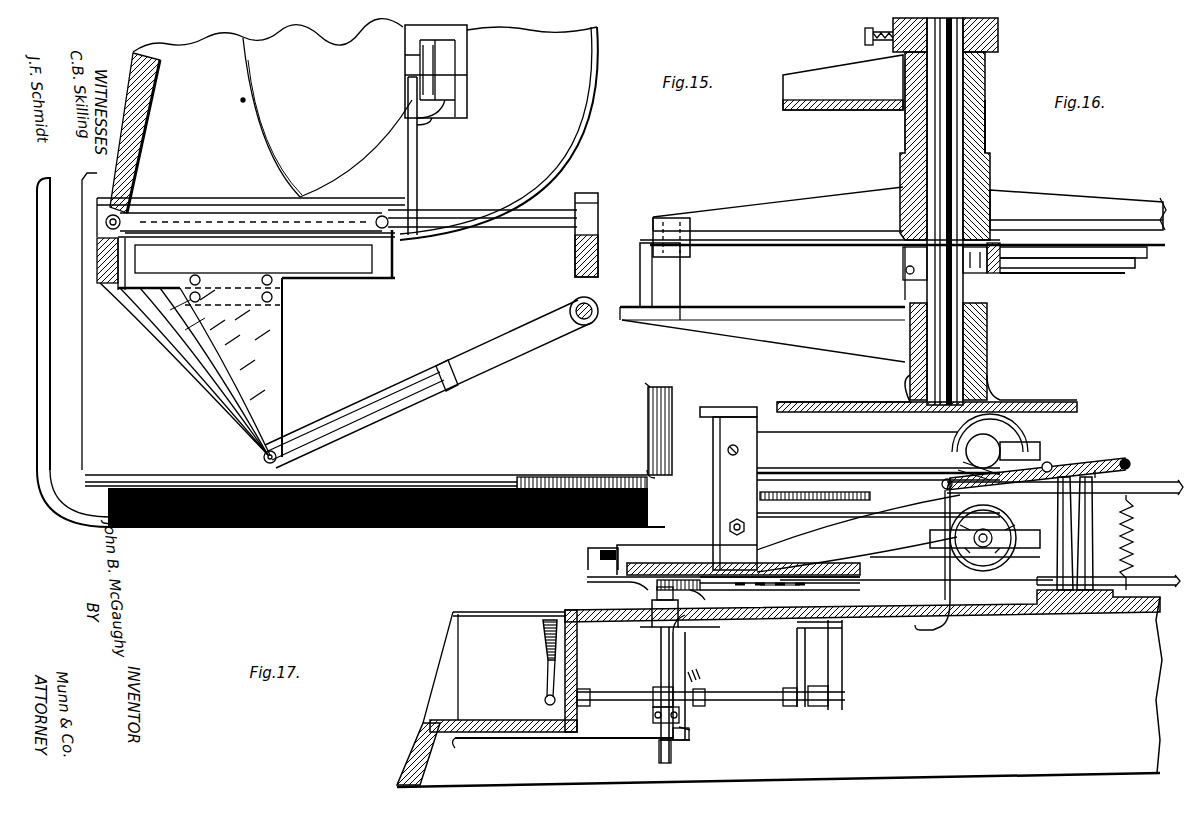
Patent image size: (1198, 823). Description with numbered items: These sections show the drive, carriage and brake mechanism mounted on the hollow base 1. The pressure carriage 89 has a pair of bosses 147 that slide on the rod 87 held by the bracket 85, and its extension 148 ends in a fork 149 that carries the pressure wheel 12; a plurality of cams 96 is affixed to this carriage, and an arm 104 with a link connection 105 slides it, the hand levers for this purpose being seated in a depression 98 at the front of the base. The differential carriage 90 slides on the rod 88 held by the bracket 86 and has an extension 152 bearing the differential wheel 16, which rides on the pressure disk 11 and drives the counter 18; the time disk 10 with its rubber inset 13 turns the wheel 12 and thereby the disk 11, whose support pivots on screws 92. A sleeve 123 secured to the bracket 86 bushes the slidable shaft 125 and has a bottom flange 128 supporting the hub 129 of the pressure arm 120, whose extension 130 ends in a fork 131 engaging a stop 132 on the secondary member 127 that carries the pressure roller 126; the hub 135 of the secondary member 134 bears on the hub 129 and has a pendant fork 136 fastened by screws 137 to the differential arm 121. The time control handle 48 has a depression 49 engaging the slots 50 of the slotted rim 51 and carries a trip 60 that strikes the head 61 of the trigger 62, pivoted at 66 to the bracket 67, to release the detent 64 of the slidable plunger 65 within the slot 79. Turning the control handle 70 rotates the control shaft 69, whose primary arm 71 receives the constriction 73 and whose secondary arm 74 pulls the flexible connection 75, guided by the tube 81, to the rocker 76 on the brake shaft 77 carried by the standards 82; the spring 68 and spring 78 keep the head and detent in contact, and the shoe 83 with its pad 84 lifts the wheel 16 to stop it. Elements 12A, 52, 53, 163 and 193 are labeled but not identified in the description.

In FIG. 15, the hollow base 1 is at (372, 497).
In FIG. 16, the hollow base 1 is at (870, 402).
In FIG. 17, the hollow base 1 is at (560, 612).
In FIG. 15, the time disk 10 is at (243, 100).
In FIG. 17, the time disk 10 is at (1152, 578).
In FIG. 17, the pressure disk 11 is at (1145, 482).
In FIG. 15, the pressure wheel 12 is at (405, 55).
In FIG. 17, the pressure wheel 12 is at (1012, 558).
In FIG. 16, the screw 12A is at (865, 36).
In FIG. 15, the rubber inset 13 is at (268, 137).
In FIG. 17, the differential wheel 16 is at (1000, 428).
In FIG. 17, the counter 18 is at (968, 455).
In FIG. 17, the time control handle 48 is at (833, 563).
In FIG. 17, the depression 49 is at (670, 575).
In FIG. 17, the slots 50 is at (700, 582).
In FIG. 17, the slotted rim 51 is at (640, 575).
In FIG. 17, the bracket 52 is at (640, 545).
In FIG. 17, the knob 53 is at (588, 556).
In FIG. 17, the trip 60 is at (705, 626).
In FIG. 17, the head of trigger 61 is at (686, 612).
In FIG. 17, the trigger 62 is at (688, 660).
In FIG. 17, the detent 64 is at (652, 605).
In FIG. 17, the slidable plunger 65 is at (661, 668).
In FIG. 17, the pivot 66 is at (689, 735).
In FIG. 17, the bracket 67 is at (583, 738).
In FIG. 17, the spring 68 is at (700, 690).
In FIG. 17, the control shaft 69 is at (780, 693).
In FIG. 17, the control handle 70 is at (545, 645).
In FIG. 17, the primary arm 71 is at (653, 716).
In FIG. 17, the constriction 73 is at (683, 727).
In FIG. 17, the secondary arm 74 is at (800, 660).
In FIG. 17, the flexible connection 75 is at (915, 630).
In FIG. 17, the rocker 76 is at (1098, 470).
In FIG. 17, the brake shaft 77 is at (1048, 463).
In FIG. 17, the spring 78 is at (1130, 540).
In FIG. 17, the slot 79 is at (640, 627).
In FIG. 17, the tube 81 is at (950, 625).
In FIG. 17, the standards 82 is at (1065, 535).
In FIG. 17, the shoe 83 is at (1000, 520).
In FIG. 17, the pad 84 is at (1005, 470).
In FIG. 15, the bracket 85 is at (108, 225).
In FIG. 15, the bracket 86 is at (600, 220).
In FIG. 16, the bracket 86 is at (998, 36).
In FIG. 17, the bracket 86 is at (765, 470).
In FIG. 15, the rod 87 is at (470, 212).
In FIG. 17, the rod 88 is at (728, 450).
In FIG. 15, the pressure carriage 89 is at (338, 285).
In FIG. 17, the differential carriage 90 is at (772, 420).
In FIG. 17, the screws 92 is at (728, 525).
In FIG. 15, the cams 96 is at (210, 355).
In FIG. 15, the depression 98 is at (640, 396).
In FIG. 15, the arm 104 is at (130, 143).
In FIG. 15, the link connection 105 is at (188, 222).
In FIG. 16, the pressure arm 120 is at (1070, 205).
In FIG. 16, the differential arm 121 is at (1105, 265).
In FIG. 16, the sleeve 123 is at (905, 140).
In FIG. 16, the shaft 125 is at (987, 75).
In FIG. 15, the pressure roller 126 is at (262, 457).
In FIG. 15, the secondary member 127 is at (475, 350).
In FIG. 16, the secondary member 127 is at (786, 308).
In FIG. 16, the bottom flange 128 is at (907, 252).
In FIG. 16, the hub 129 is at (990, 172).
In FIG. 16, the extension 130 is at (730, 222).
In FIG. 16, the fork 131 is at (668, 218).
In FIG. 15, the stop 132 is at (455, 385).
In FIG. 16, the stop 132 is at (662, 285).
In FIG. 16, the secondary member 134 is at (815, 105).
In FIG. 16, the hub 135 is at (986, 142).
In FIG. 16, the pendant fork 136 is at (990, 210).
In FIG. 16, the screws 137 is at (905, 282).
In FIG. 15, the bosses 147 is at (395, 255).
In FIG. 15, the extension 148 is at (395, 165).
In FIG. 17, the extension 148 is at (855, 540).
In FIG. 15, the fork 149 is at (445, 113).
In FIG. 17, the fork 149 is at (930, 538).
In FIG. 17, the extension 152 is at (843, 446).
In FIG. 17, the block 163 is at (1022, 444).
In FIG. 16, the flange 193 is at (990, 333).